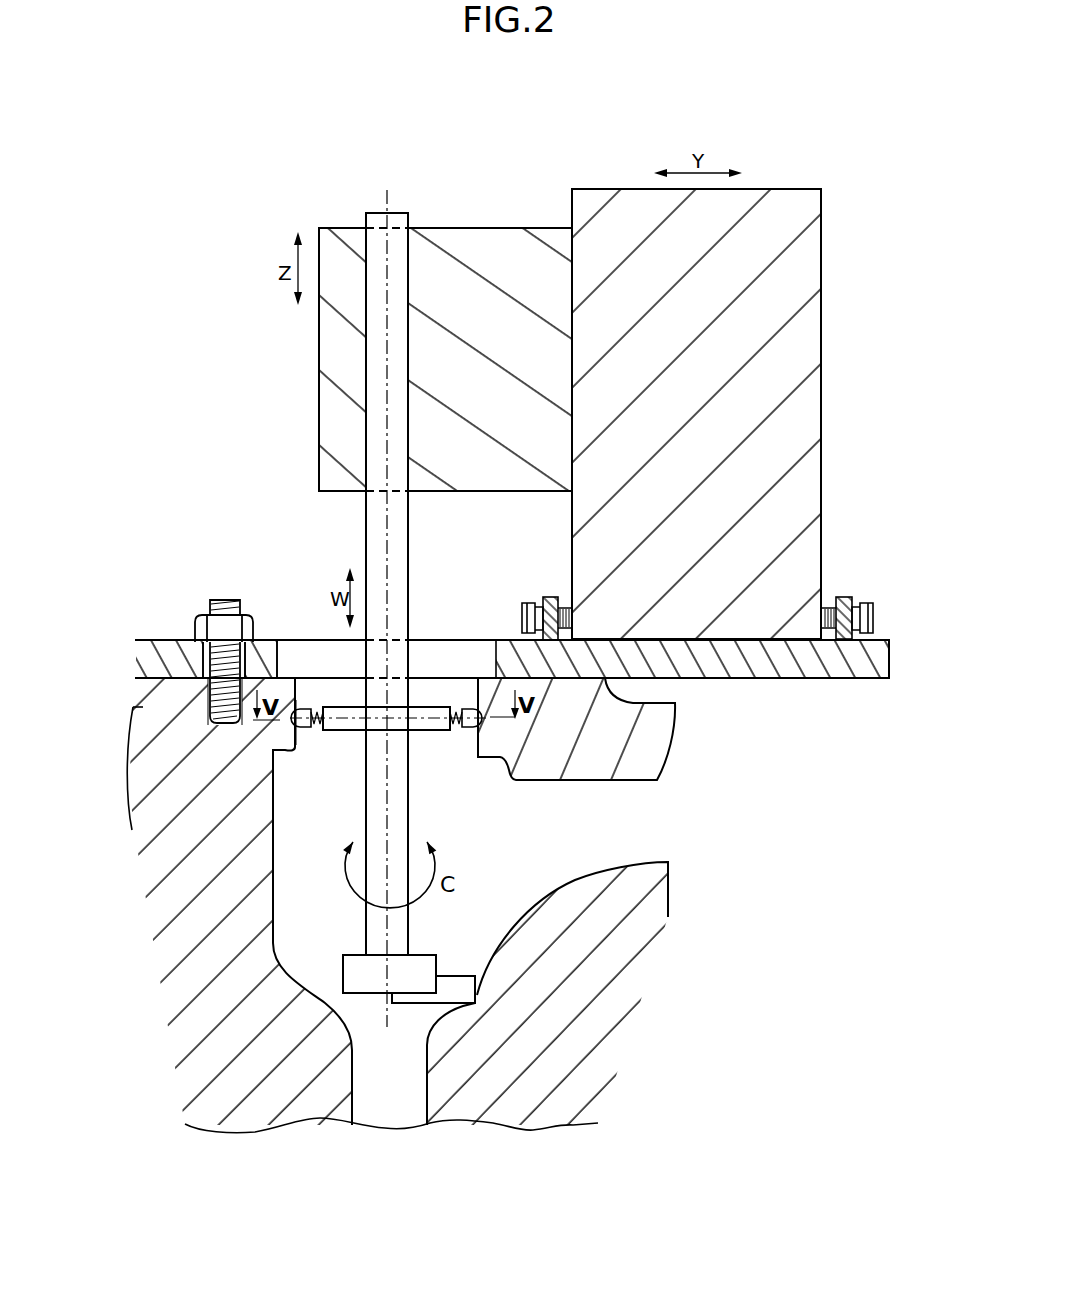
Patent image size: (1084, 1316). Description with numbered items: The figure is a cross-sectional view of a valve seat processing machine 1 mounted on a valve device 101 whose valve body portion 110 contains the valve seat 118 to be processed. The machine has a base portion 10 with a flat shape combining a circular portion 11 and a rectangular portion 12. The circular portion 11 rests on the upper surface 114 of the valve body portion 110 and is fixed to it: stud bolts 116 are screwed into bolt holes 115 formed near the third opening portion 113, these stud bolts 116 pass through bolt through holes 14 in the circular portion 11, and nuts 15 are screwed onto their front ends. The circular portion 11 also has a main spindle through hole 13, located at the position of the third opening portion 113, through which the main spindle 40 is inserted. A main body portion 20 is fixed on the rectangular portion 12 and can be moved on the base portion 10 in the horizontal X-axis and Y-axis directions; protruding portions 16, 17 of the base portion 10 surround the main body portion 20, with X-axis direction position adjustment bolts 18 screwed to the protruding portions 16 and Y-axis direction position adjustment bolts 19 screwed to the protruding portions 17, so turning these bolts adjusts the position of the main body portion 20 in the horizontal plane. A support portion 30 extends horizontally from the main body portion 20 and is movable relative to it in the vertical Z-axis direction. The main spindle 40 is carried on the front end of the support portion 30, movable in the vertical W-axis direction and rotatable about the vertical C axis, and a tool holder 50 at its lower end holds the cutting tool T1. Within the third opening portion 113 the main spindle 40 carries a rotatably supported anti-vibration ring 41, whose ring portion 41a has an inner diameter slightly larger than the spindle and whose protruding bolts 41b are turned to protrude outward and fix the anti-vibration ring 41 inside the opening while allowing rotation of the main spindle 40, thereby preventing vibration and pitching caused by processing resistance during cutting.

The valve seat processing machine 1 is at (801, 129).
The base portion 10 is at (126, 636).
The circular portion 11 is at (133, 663).
The rectangular portion 12 is at (890, 678).
The main spindle through hole 13 is at (283, 640).
The bolt through holes 14 is at (207, 640).
The nuts 15 is at (200, 615).
The protruding portions 16 is at (698, 574).
The protruding portions 17 is at (548, 597).
The X-axis direction position adjustment bolts 18 is at (675, 587).
The Y-axis direction position adjustment bolts 19 is at (522, 612).
The main body portion 20 is at (822, 405).
The support portion 30 is at (318, 340).
The main spindle 40 is at (365, 525).
The anti-vibration ring 41 is at (511, 769).
The ring portion 41a is at (423, 730).
The protruding bolts 41b is at (472, 730).
The tool holder 50 is at (343, 975).
The valve device 101 is at (463, 940).
The valve body portion 110 is at (673, 1030).
The third opening portion 113 is at (300, 758).
The upper surface 114 is at (133, 708).
The bolt holes 115 is at (243, 723).
The stud bolts 116 is at (225, 600).
The valve seat 118 is at (350, 1015).
The cutting tool T1 is at (422, 1002).